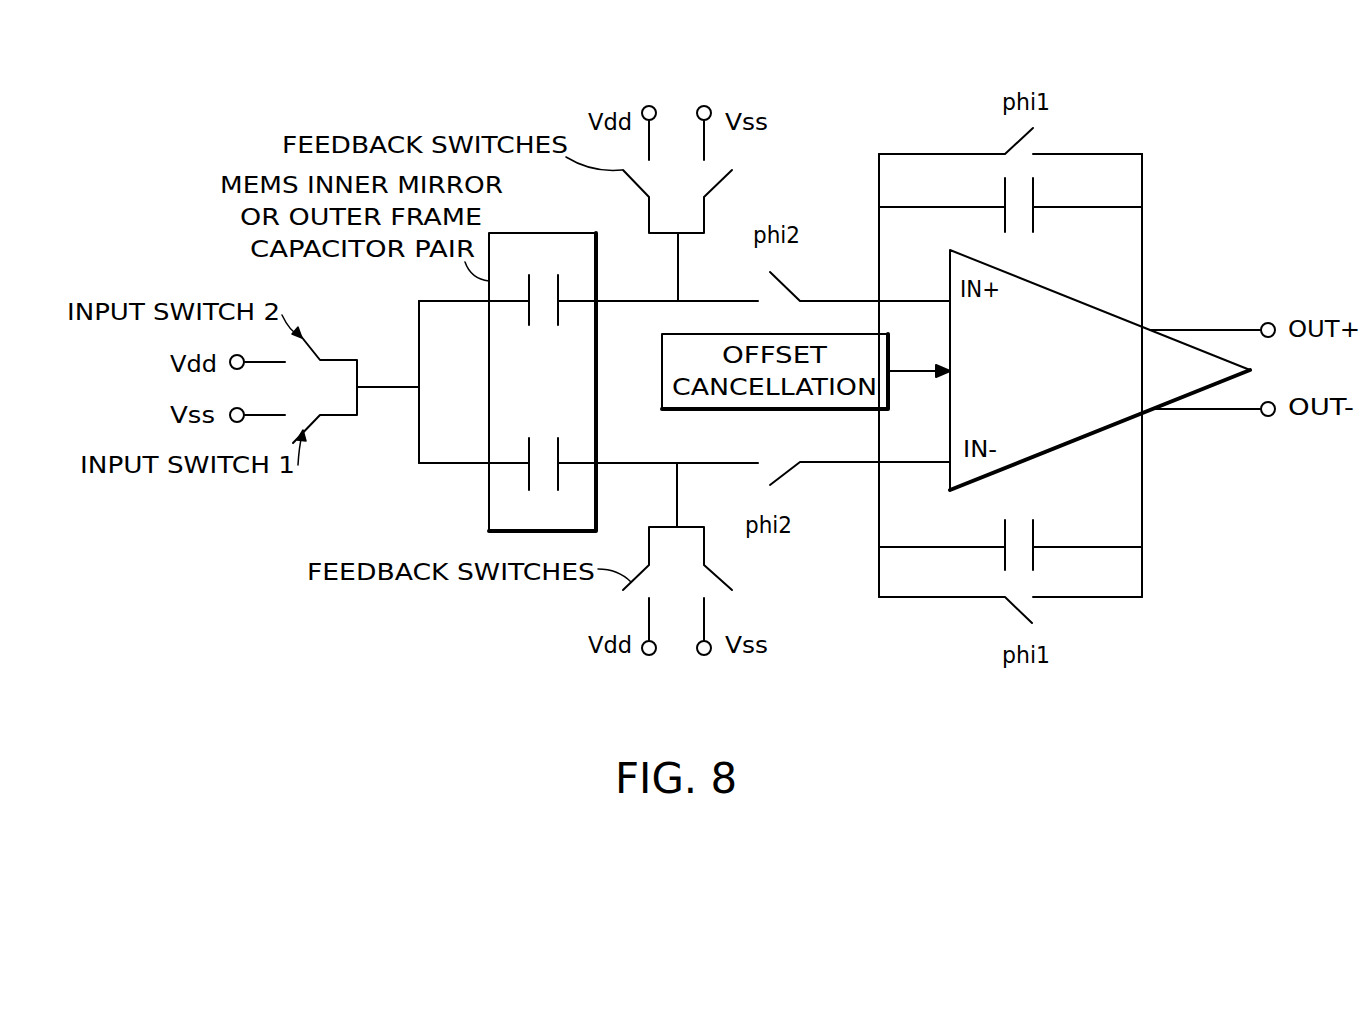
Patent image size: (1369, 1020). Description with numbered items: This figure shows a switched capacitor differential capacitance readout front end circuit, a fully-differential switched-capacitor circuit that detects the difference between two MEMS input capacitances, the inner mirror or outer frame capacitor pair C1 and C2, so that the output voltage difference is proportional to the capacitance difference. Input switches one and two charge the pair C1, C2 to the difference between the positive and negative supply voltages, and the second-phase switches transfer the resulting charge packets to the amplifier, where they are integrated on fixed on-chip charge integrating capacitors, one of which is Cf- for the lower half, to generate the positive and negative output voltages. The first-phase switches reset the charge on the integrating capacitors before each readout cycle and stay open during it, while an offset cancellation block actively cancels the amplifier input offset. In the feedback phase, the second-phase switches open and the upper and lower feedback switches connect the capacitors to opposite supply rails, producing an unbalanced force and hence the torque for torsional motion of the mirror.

The input capacitance C1 is at (588, 283).
The input capacitance C2 is at (588, 481).
The charge integrating capacitor Cf- is at (1010, 528).